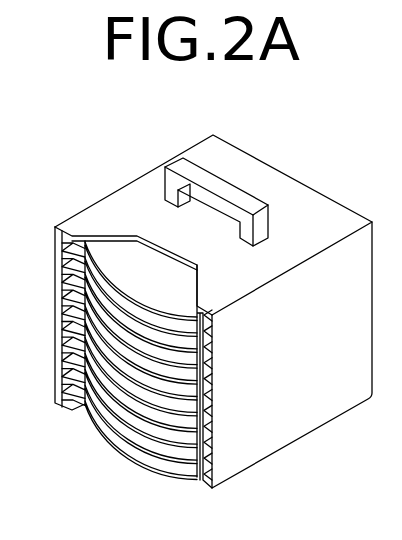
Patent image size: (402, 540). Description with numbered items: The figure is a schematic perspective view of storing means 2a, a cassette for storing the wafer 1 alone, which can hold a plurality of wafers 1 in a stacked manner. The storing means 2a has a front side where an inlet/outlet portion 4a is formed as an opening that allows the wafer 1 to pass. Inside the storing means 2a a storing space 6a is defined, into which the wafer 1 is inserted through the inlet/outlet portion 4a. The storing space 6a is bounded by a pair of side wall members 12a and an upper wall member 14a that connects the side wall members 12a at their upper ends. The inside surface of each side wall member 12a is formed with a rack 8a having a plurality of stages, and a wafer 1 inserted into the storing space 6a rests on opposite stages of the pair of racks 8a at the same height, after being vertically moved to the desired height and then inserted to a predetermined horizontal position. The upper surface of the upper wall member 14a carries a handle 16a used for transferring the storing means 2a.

The wafer 1 is at (123, 362).
The storing means 2a is at (197, 295).
The inlet/outlet portion 4a is at (203, 404).
The storing space 6a is at (117, 467).
The rack 8a is at (78, 413).
The side wall member 12a is at (55, 268).
The upper wall member 14a is at (278, 195).
The handle 16a is at (213, 185).